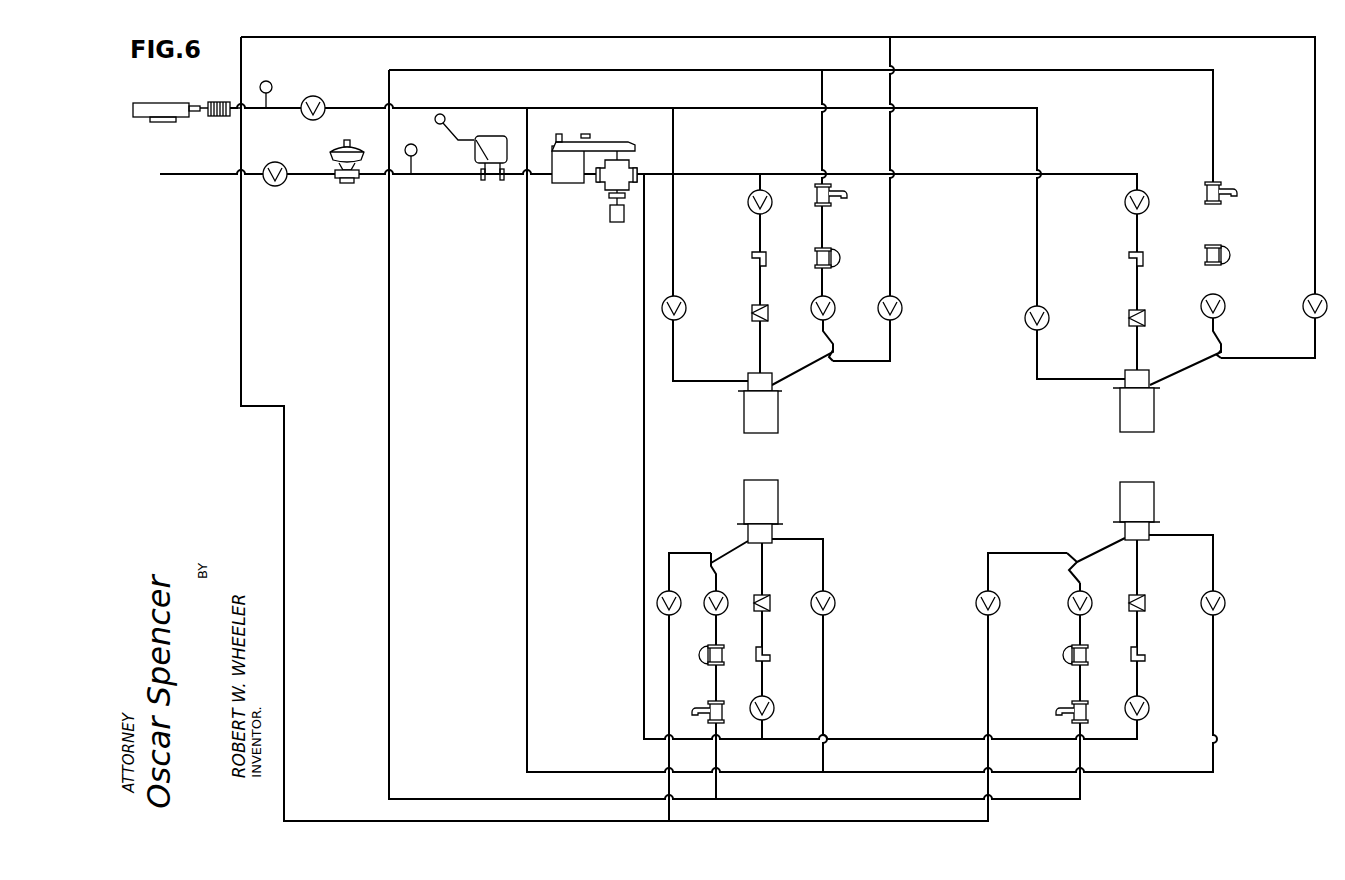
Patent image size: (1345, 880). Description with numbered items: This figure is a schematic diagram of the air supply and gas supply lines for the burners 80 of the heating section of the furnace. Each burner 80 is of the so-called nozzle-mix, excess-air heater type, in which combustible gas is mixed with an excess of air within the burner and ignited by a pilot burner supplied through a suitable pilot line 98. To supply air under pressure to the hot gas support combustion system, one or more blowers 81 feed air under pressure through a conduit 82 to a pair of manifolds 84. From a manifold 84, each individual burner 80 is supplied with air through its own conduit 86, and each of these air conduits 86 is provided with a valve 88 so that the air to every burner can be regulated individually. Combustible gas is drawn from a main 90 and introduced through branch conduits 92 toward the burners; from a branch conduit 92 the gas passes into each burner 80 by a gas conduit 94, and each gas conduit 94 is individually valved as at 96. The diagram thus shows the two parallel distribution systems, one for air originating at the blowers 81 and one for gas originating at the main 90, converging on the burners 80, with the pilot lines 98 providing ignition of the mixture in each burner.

The burner 80 is at (776, 480).
The blower 81 is at (162, 124).
The conduit 82 is at (460, 108).
The manifold 84 is at (600, 107).
The conduit 86 is at (675, 222).
The valve 88 is at (686, 313).
The main 90 is at (200, 177).
The branch conduit 92 is at (956, 175).
The gas conduit 94 is at (761, 240).
The valve 96 is at (772, 208).
The pilot line 98 is at (824, 225).